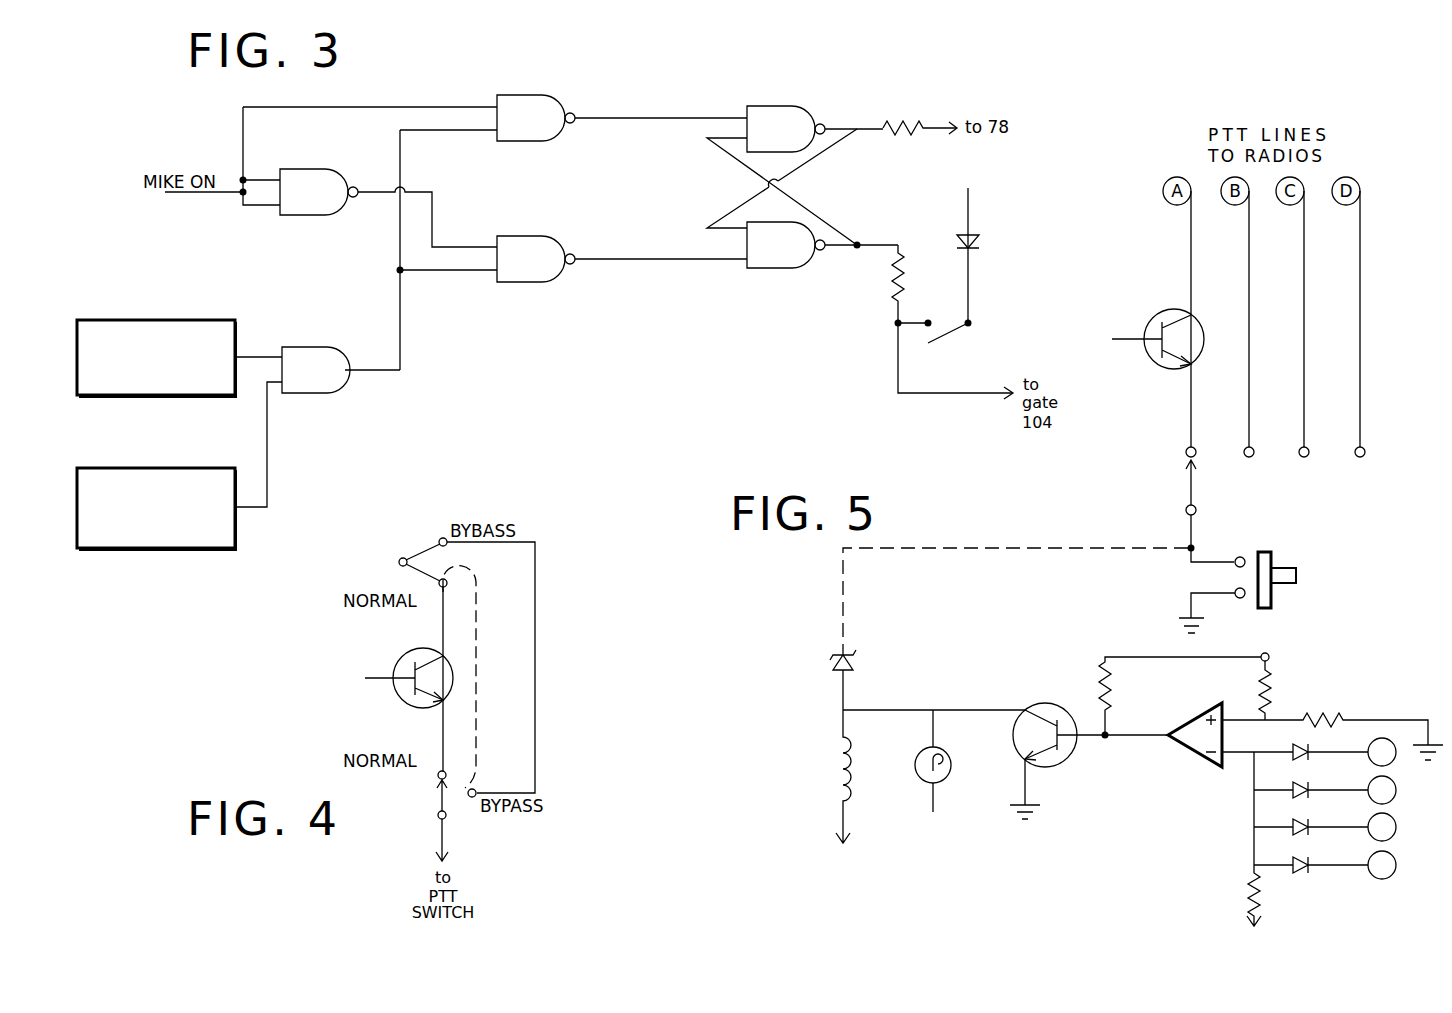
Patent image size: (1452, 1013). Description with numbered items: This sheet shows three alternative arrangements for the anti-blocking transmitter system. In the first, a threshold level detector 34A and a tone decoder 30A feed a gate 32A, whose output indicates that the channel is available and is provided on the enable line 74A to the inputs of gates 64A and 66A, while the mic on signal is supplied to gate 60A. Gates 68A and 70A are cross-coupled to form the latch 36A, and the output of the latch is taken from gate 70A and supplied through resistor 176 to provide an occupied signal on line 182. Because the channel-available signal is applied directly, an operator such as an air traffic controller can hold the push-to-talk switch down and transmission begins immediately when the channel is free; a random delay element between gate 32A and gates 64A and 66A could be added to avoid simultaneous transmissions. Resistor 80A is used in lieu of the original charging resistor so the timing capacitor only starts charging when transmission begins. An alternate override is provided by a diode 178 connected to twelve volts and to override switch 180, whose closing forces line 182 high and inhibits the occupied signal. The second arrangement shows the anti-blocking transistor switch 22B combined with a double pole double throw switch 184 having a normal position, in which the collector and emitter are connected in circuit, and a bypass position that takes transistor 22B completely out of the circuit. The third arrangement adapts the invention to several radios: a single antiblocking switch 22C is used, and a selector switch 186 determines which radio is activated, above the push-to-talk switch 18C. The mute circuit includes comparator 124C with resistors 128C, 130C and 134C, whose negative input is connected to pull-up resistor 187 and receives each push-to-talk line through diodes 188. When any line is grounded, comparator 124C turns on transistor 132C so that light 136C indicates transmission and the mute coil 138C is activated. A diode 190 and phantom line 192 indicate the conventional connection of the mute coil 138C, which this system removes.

In FIG. 3, the threshold level detector 34A is at (138, 320).
In FIG. 3, the tone decoder 30A is at (175, 549).
In FIG. 3, the gate 32A is at (316, 393).
In FIG. 3, the enable line 74A is at (395, 373).
In FIG. 3, the gate 60A is at (305, 215).
In FIG. 3, the gate 64A is at (531, 282).
In FIG. 3, the gate 66A is at (513, 95).
In FIG. 3, the gate 68A is at (758, 106).
In FIG. 3, the gate 70A is at (775, 268).
In FIG. 3, the latch 36A is at (662, 203).
In FIG. 3, the resistor 80A is at (897, 131).
In FIG. 3, the resistor 176 is at (895, 281).
In FIG. 3, the diode 178 is at (980, 242).
In FIG. 3, the override switch 180 is at (968, 336).
In FIG. 3, the line 182 is at (898, 367).
In FIG. 4, the anti-blocking switch 22B is at (394, 696).
In FIG. 4, the double pole double throw switch 184 is at (462, 793).
In FIG. 5, the antiblocking switch 22C is at (1181, 374).
In FIG. 5, the selector switch 186 is at (1186, 479).
In FIG. 5, the push-to-talk switch 18C is at (1273, 556).
In FIG. 5, the phantom line 192 is at (933, 546).
In FIG. 5, the diode 190 is at (855, 659).
In FIG. 5, the mute coil 138C is at (840, 762).
In FIG. 5, the light 136C is at (915, 772).
In FIG. 5, the transistor 132C is at (1053, 768).
In FIG. 5, the resistor 134C is at (1100, 690).
In FIG. 5, the comparator 124C is at (1206, 705).
In FIG. 5, the resistor 128C is at (1270, 682).
In FIG. 5, the resistor 130C is at (1320, 712).
In FIG. 5, the diodes 188 is at (1290, 757).
In FIG. 5, the pull-up resistor 187 is at (1258, 895).